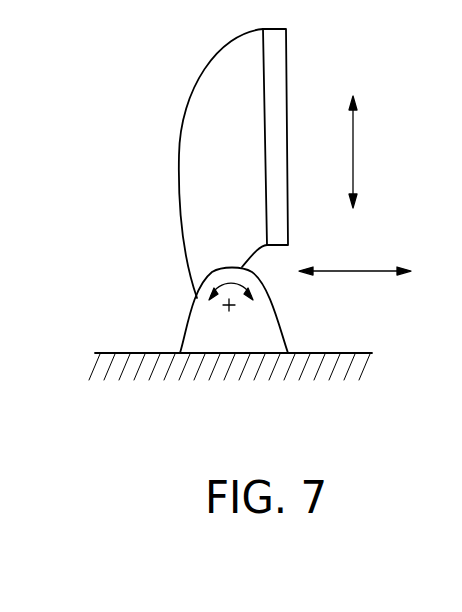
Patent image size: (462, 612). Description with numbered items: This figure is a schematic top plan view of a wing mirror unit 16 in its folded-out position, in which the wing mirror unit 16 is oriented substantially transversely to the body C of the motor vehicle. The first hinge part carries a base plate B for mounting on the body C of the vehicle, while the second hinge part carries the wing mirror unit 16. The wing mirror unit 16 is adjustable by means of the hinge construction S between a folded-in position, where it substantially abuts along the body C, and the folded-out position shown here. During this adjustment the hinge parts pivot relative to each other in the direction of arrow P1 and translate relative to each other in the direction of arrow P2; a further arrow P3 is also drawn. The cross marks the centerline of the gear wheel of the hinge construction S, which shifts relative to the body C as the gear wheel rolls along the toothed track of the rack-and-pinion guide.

The wing mirror unit 16 is at (213, 145).
The arrow P1 is at (216, 286).
The arrow P2 is at (369, 152).
The horizontal movement P3 is at (355, 256).
The hinge construction S is at (220, 308).
The base plate B is at (163, 365).
The body C is at (325, 350).